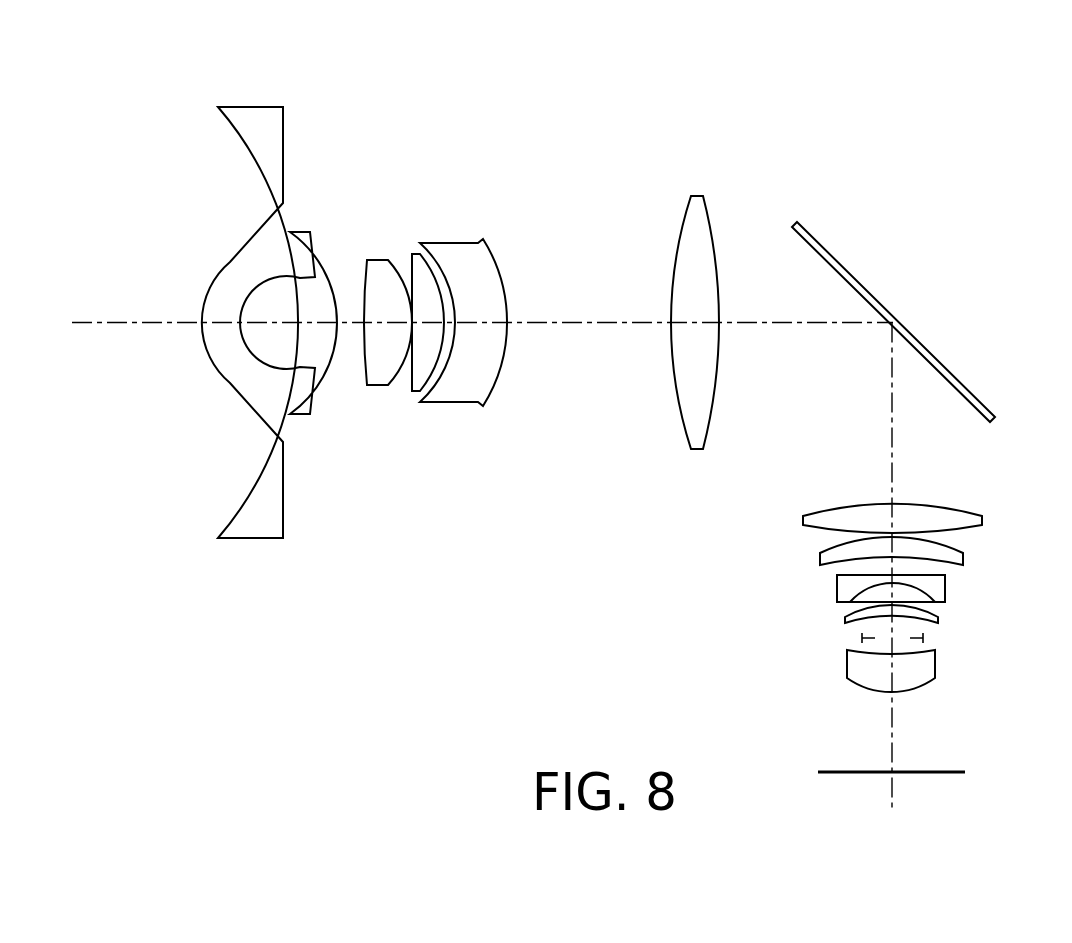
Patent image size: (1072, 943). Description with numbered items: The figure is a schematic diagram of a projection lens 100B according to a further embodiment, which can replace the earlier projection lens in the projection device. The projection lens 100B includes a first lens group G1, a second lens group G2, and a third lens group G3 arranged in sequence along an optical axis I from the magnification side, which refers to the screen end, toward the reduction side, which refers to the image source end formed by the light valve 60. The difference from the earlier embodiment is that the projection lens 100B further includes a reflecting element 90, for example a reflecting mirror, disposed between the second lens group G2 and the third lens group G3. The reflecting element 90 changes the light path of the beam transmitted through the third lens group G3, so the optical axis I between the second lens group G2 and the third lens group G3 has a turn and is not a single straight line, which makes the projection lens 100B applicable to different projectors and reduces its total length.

The projection lens 100B is at (569, 424).
The reflecting element 90 is at (977, 396).
The light valve 60 is at (948, 774).
The optical axis I is at (85, 320).
The first lens group G1 is at (507, 80).
The second lens group G2 is at (719, 80).
The third lens group G3 is at (1013, 502).